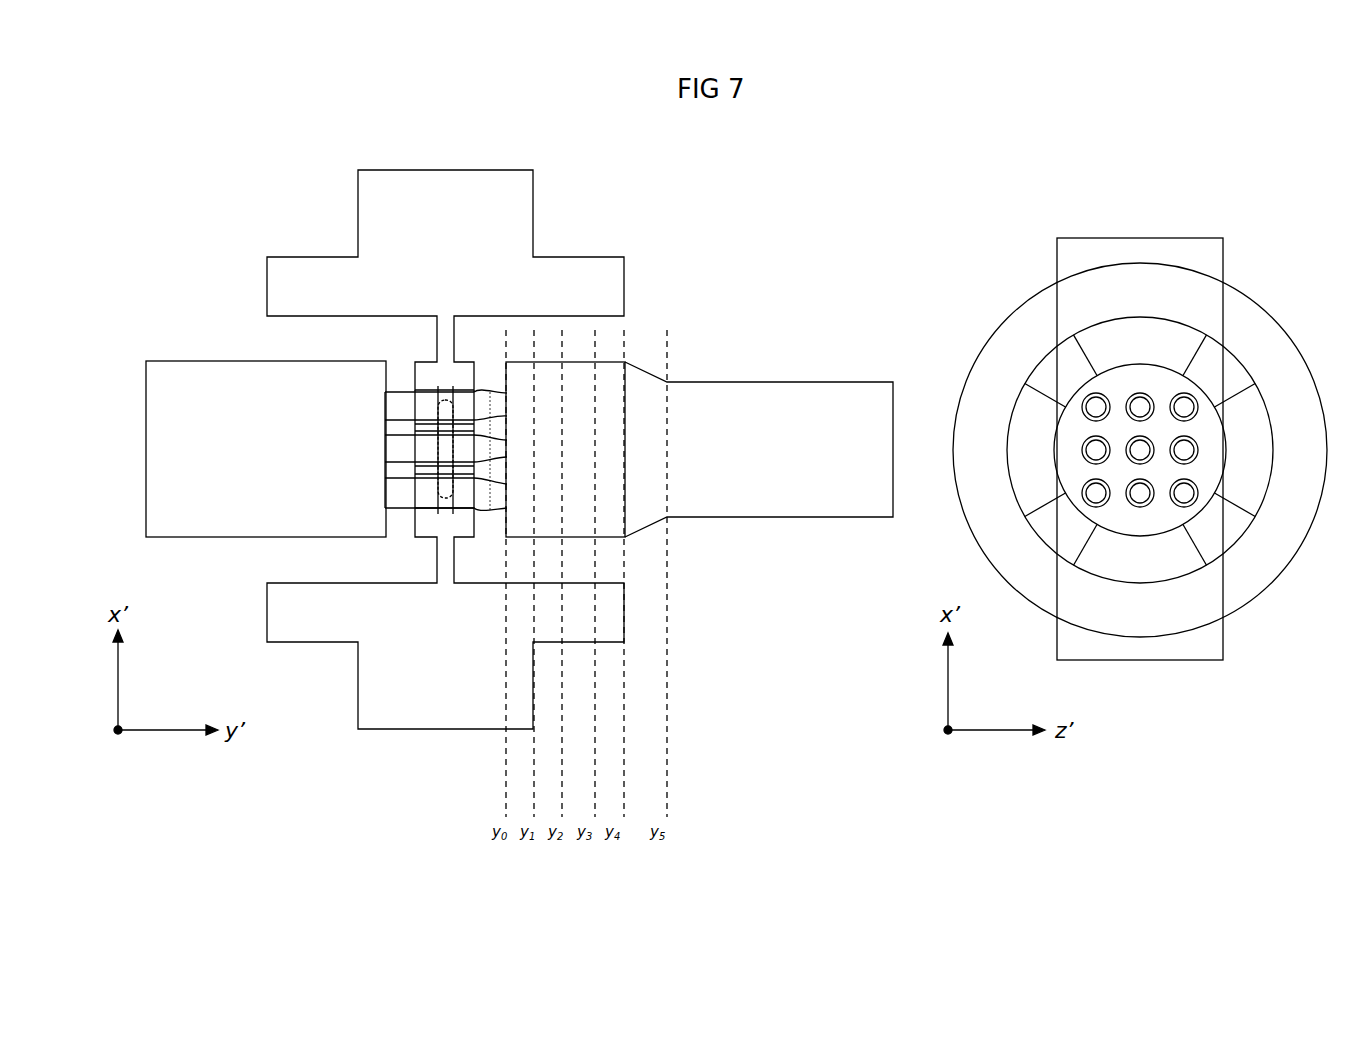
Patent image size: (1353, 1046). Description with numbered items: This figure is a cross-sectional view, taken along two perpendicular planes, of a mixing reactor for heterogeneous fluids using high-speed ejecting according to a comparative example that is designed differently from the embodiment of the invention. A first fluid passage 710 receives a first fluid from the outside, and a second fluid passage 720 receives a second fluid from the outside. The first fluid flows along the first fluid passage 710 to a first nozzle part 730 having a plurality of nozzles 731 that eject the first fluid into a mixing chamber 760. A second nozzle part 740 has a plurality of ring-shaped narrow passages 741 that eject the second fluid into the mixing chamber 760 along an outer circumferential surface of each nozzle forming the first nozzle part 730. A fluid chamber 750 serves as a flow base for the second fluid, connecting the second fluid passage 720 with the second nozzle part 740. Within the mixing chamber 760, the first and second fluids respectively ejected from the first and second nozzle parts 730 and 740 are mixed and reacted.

The first fluid passage 710 is at (207, 361).
The second fluid passage 720 is at (534, 207).
The first nozzle part 730 is at (378, 405).
The second nozzle part 740 is at (507, 392).
The fluid chamber 750 is at (476, 530).
The mixing chamber 760 is at (608, 362).
The nozzles 731 is at (1096, 402).
The ring-shaped narrow passages 741 is at (1184, 402).